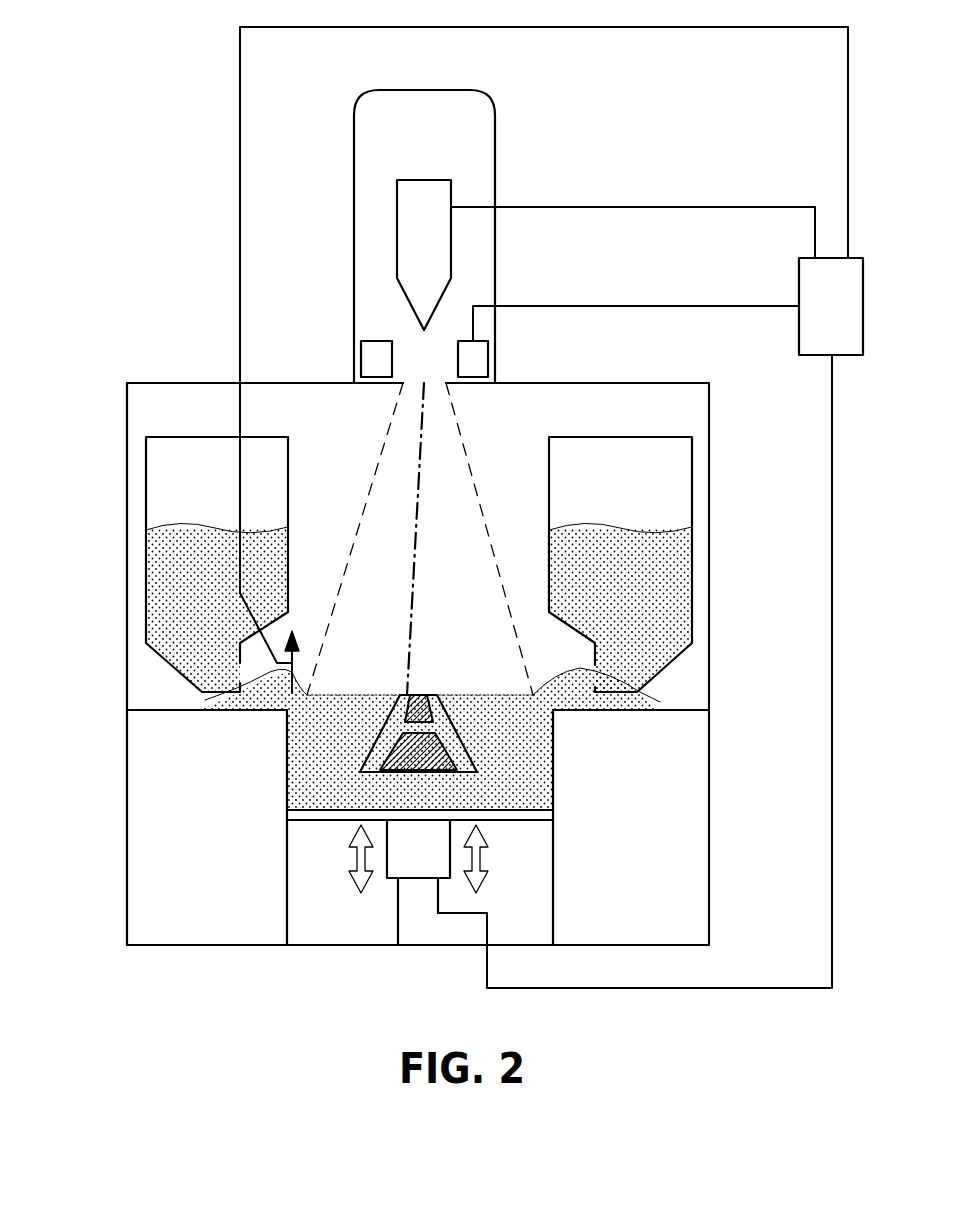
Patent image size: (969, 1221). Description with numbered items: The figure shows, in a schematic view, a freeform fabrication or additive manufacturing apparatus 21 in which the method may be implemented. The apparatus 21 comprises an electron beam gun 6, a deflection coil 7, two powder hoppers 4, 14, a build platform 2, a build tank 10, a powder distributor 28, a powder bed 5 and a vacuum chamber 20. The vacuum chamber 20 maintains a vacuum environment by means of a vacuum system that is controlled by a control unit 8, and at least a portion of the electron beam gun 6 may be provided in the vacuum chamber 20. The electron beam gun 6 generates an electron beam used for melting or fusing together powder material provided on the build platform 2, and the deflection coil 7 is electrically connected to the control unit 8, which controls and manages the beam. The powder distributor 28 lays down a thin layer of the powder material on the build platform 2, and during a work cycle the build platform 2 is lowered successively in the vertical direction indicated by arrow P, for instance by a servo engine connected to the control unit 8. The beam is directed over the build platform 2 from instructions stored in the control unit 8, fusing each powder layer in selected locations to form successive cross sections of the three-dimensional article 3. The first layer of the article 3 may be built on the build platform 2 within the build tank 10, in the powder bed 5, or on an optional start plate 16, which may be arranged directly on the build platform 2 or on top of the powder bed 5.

The build platform 2 is at (333, 820).
The three-dimensional article 3 is at (390, 733).
The powder hopper 4 is at (217, 580).
The powder bed 5 is at (512, 737).
The electron beam gun 6 is at (410, 245).
The deflection coil 7 is at (370, 358).
The control unit 8 is at (831, 306).
The build tank 10 is at (285, 875).
The powder hopper 14 is at (632, 578).
The start plate 16 is at (432, 782).
The vacuum chamber 20 is at (710, 888).
The additive manufacturing apparatus 21 is at (684, 136).
The powder distributor 28 is at (280, 706).